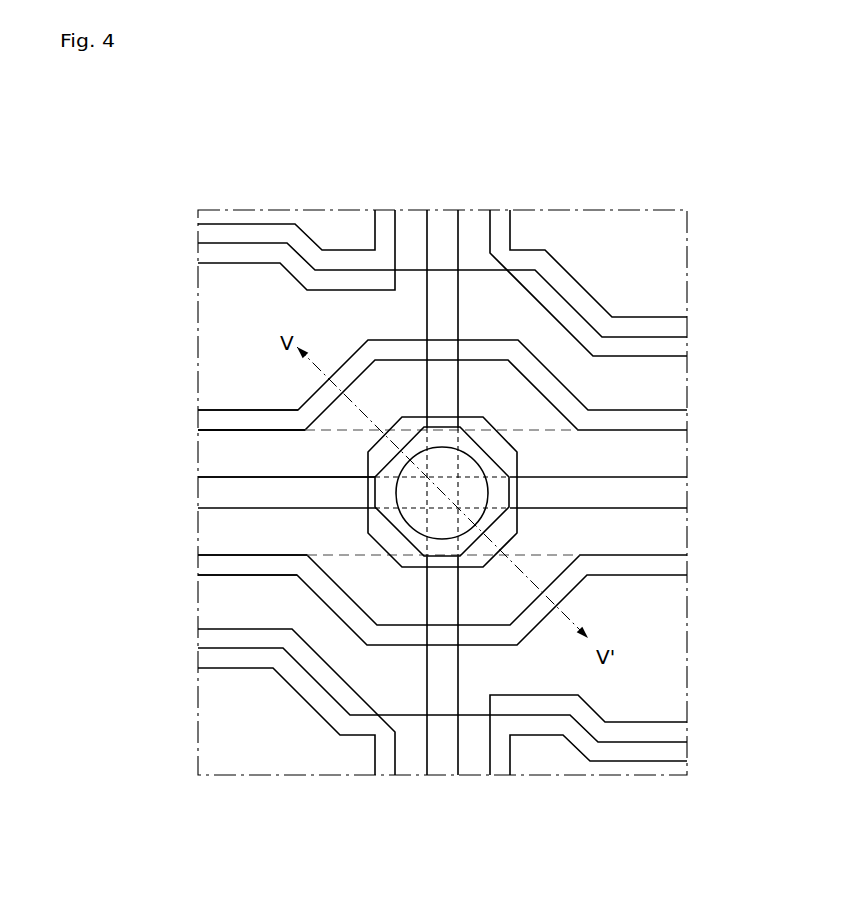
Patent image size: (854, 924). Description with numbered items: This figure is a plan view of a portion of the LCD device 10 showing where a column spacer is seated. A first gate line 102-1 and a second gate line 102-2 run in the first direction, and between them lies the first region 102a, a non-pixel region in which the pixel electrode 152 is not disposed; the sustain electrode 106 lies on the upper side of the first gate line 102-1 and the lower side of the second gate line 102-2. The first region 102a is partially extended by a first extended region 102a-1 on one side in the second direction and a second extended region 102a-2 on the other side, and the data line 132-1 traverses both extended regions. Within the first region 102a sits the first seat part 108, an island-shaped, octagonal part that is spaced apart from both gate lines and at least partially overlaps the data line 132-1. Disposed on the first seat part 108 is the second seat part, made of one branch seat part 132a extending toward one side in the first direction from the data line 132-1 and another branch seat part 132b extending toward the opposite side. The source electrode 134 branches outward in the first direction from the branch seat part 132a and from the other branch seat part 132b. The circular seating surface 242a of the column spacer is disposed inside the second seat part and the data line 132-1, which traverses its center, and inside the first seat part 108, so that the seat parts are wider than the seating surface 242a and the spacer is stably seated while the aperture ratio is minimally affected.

The LCD device 10 is at (477, 148).
The pixel electrode 152 is at (306, 221).
The sustain electrode 106 is at (205, 233).
The first extended region 102a-1 is at (398, 382).
The second extended region 102a-2 is at (398, 597).
The first gate line 102-1 is at (206, 422).
The second gate line 102-2 is at (206, 563).
The source electrode 134 is at (206, 490).
The first region 102a is at (206, 457).
The data line 132-1 is at (460, 389).
The first seat part 108 is at (379, 443).
The 2-1st seat part 132a is at (398, 522).
The 2-2nd seat part 132b is at (493, 507).
The seating surface 242a is at (474, 473).